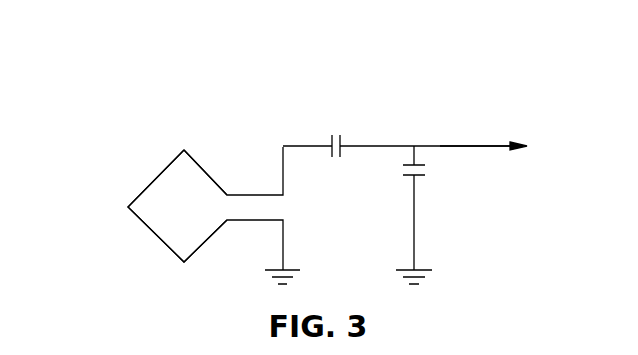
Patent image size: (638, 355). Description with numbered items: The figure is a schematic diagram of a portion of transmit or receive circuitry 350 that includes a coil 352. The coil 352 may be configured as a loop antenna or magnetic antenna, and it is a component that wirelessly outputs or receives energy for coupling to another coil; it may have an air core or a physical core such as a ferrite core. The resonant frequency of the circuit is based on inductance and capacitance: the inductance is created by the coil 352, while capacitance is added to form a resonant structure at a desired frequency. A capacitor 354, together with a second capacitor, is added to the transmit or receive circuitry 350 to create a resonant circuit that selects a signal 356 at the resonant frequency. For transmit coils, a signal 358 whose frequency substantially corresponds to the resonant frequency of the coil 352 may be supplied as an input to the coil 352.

The transmit or receive circuitry 350 is at (226, 100).
The coil 352 is at (158, 175).
The capacitor 354 is at (345, 139).
The signal 356 is at (419, 176).
The signal 358 is at (452, 145).